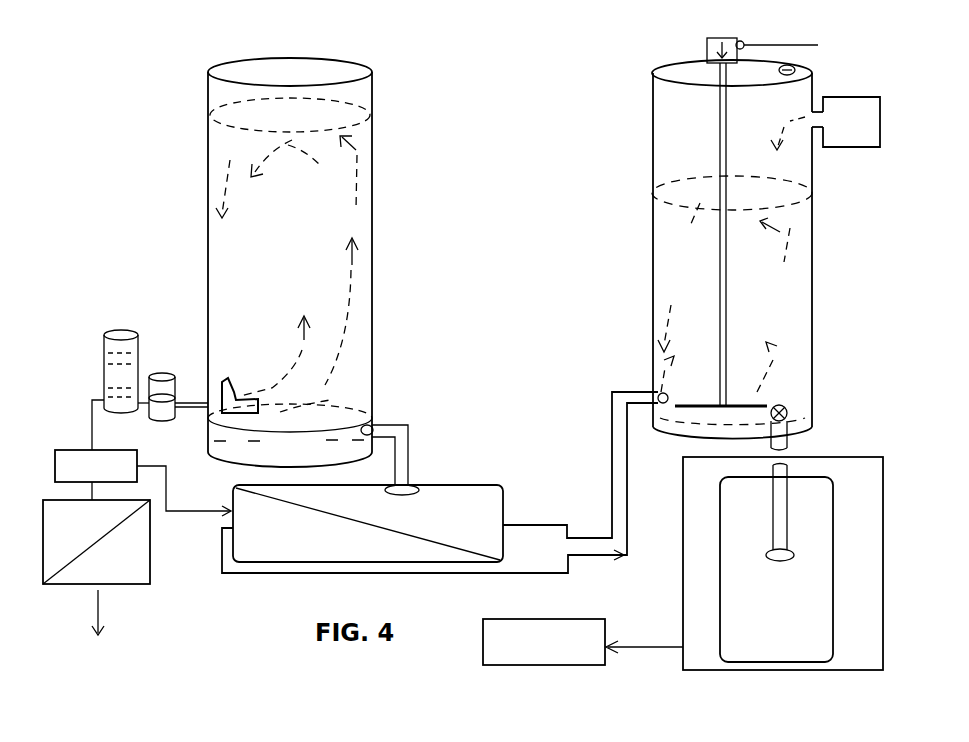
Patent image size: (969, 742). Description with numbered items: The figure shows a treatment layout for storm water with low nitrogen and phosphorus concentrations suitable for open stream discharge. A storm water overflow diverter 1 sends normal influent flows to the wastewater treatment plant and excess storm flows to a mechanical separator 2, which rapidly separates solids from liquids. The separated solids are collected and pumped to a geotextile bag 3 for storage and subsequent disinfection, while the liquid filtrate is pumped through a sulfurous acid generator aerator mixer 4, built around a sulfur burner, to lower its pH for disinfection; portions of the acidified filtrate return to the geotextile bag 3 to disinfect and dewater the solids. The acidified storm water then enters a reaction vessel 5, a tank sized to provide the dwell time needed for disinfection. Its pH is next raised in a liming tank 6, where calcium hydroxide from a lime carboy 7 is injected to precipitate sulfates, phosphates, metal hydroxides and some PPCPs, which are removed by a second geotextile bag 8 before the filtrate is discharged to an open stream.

The storm water overflow diverter 1 is at (150, 553).
The mechanical separator 2 is at (80, 451).
The geotextile bag 3 is at (458, 501).
The sulfurous acid generator aerator mixer 4 is at (130, 406).
The reaction vessel 5 is at (216, 262).
The liming tank 6 is at (660, 141).
The lime carboy 7 is at (840, 147).
The second geotextile bag 8 is at (733, 513).